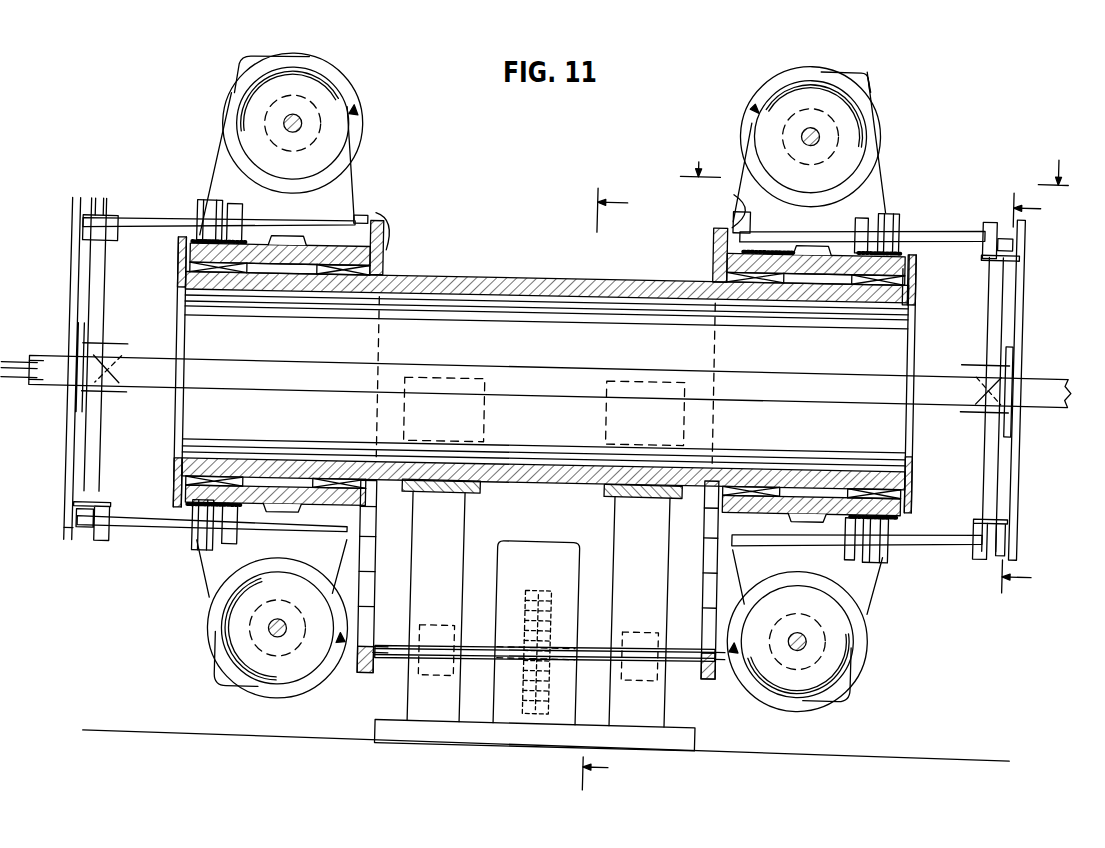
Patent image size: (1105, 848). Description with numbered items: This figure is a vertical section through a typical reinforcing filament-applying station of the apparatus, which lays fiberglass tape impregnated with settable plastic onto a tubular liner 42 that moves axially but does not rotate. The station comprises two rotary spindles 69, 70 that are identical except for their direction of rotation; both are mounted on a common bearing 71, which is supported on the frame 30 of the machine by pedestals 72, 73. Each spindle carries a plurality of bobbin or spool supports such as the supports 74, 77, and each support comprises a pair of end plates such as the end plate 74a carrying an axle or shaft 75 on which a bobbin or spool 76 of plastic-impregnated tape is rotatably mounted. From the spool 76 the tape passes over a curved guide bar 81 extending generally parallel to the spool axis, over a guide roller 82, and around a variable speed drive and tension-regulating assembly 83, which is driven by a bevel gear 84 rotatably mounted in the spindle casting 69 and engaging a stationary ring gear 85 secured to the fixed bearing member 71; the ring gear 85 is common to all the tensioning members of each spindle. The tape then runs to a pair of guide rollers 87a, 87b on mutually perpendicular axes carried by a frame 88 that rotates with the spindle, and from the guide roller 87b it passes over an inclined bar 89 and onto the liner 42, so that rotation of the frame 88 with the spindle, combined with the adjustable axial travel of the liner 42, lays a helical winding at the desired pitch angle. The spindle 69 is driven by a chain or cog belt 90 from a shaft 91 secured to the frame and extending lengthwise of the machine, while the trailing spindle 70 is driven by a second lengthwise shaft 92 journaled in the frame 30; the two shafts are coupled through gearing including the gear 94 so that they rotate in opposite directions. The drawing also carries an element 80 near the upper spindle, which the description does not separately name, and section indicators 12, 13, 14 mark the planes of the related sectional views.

The frame 30 is at (950, 748).
The tubular liner 42 is at (1091, 378).
The rotary spindle 69 is at (707, 248).
The rotary spindle 70 is at (383, 238).
The common bearing 71 is at (504, 278).
The pedestal 72 is at (468, 512).
The pedestal 73 is at (617, 515).
The bobbin or spool support 74 is at (853, 67).
The end plate 74a is at (862, 78).
The axle or shaft 75 is at (803, 130).
The bobbin or spool 76 is at (870, 108).
The bobbin or spool support 77 is at (860, 702).
The drive belt 80 is at (742, 162).
The curved guide bar 81 is at (730, 220).
The guide roller 82 is at (858, 208).
The variable speed drive and tension-regulating assembly 83 is at (893, 212).
The bevel gear 84 is at (898, 247).
The stationary ring gear 85 is at (912, 268).
The guide roller 87a is at (977, 222).
The guide roller 87b is at (1001, 227).
The frame 88 is at (1022, 284).
The inclined bar 89 is at (975, 354).
The chain or cog belt 90 is at (370, 214).
The shaft 91 is at (391, 660).
The shaft 92 is at (490, 663).
The gear 94 is at (560, 600).
The section line 12 is at (606, 486).
The section line 13 is at (873, 169).
The section line 14 is at (1034, 399).